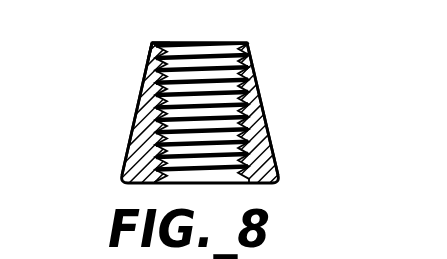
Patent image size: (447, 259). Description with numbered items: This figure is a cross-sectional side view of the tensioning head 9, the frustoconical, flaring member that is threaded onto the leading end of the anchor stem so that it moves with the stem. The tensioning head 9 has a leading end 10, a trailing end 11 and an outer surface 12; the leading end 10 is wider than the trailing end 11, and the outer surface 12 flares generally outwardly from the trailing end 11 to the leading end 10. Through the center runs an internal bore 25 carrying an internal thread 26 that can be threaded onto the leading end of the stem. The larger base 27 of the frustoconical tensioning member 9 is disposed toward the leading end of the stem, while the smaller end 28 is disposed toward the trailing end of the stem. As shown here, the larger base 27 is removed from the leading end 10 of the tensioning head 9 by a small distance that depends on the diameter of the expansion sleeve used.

The tensioning head 9 is at (286, 133).
The leading end 10 is at (266, 183).
The trailing end 11 is at (247, 43).
The outer surface 12 is at (138, 106).
The internal bore 25 is at (178, 170).
The internal thread 26 is at (222, 170).
The larger base 27 is at (278, 158).
The smaller end 28 is at (153, 45).